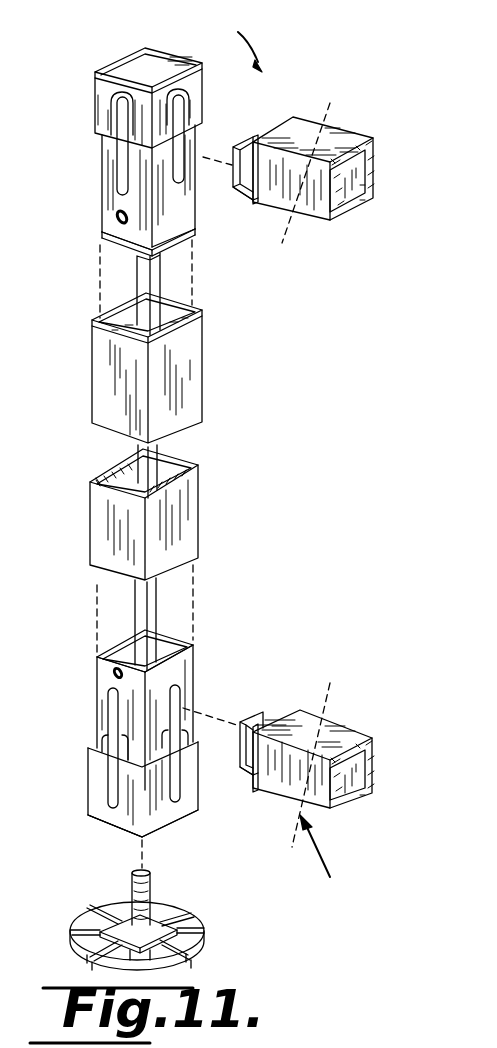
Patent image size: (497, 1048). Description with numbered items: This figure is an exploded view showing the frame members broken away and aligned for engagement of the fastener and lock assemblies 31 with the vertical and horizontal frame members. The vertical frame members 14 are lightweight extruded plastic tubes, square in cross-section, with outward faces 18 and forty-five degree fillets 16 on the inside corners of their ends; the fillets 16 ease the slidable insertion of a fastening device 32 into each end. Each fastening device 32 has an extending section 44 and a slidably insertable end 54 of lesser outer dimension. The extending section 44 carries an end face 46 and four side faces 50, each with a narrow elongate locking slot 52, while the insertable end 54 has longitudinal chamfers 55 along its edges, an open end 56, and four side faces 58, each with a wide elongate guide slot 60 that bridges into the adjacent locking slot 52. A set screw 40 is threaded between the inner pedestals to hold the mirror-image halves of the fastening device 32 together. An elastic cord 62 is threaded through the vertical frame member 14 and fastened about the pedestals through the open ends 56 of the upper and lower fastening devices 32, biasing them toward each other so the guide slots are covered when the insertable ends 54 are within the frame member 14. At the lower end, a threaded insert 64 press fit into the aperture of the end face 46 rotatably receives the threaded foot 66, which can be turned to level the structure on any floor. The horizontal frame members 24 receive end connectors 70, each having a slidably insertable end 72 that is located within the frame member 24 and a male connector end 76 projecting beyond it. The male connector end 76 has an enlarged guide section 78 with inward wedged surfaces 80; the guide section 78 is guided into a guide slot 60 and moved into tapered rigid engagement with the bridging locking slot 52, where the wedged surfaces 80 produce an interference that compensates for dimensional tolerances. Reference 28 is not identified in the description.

The vertical frame member 14 is at (180, 333).
The fillet 16 is at (113, 577).
The outward face 18 is at (120, 360).
The horizontal frame member 24 is at (366, 129).
The bracket end flanges 28 is at (335, 142).
The fastener and lock assembly 31 is at (287, 452).
The fastening device 32 is at (95, 108).
The set screw 40 is at (118, 217).
The extending section 44 is at (182, 810).
The end face 46 is at (112, 828).
The side face 50 is at (102, 87).
The locking slot 52 is at (127, 107).
The slidably insertable end 54 is at (161, 198).
The longitudinal chamfer 55 is at (163, 230).
The open end 56 is at (124, 247).
The side face 58 is at (112, 193).
The guide slot 60 is at (130, 160).
The elastic cord 62 is at (140, 280).
The threaded insert 64 is at (160, 838).
The threaded foot 66 is at (156, 908).
The end connector 70 is at (279, 123).
The slidably insertable end 72 is at (320, 476).
The male connector end 76 is at (240, 188).
The guide section 78 is at (263, 203).
The wedged surface 80 is at (264, 160).